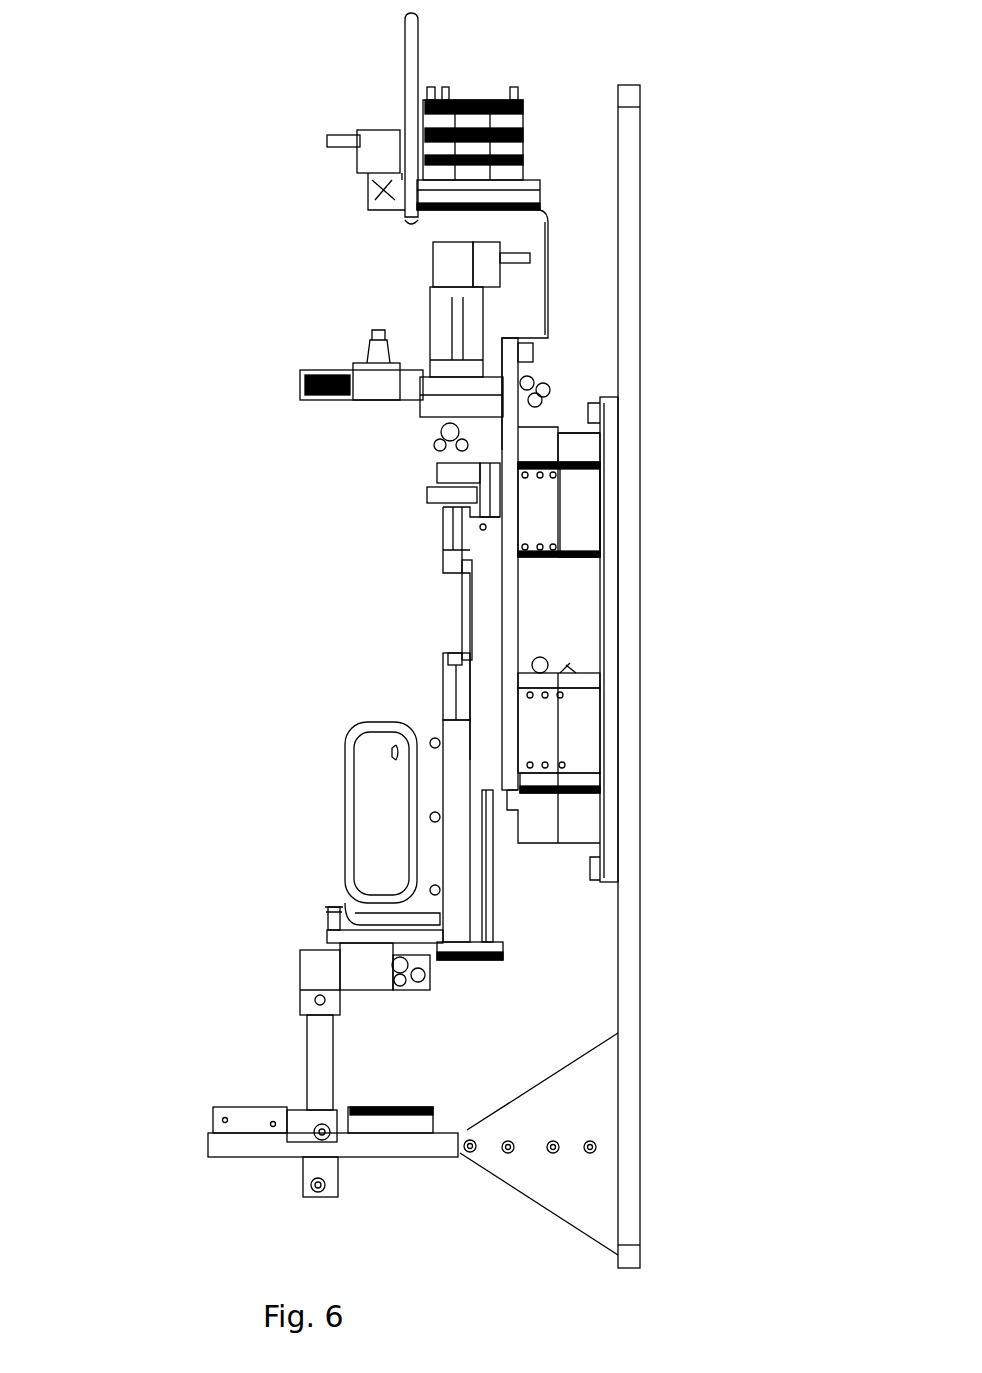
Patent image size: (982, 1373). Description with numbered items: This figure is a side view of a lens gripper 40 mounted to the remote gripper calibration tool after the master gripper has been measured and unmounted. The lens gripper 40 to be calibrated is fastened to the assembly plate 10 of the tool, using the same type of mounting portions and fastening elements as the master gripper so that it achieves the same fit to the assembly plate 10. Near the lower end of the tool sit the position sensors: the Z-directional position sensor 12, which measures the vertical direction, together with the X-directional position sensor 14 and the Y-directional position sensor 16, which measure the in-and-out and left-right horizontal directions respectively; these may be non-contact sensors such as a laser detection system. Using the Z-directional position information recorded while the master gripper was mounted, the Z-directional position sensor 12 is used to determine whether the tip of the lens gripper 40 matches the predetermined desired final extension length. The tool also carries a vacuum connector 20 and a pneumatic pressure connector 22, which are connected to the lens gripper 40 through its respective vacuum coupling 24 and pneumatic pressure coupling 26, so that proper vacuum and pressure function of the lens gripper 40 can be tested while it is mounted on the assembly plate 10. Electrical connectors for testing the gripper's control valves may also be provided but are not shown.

The assembly plate 10 is at (613, 633).
The Z-directional position sensor 12 is at (300, 1173).
The X-directional position sensor 14 is at (307, 1107).
The Y-directional position sensor 16 is at (253, 1107).
The vacuum connector 20 is at (585, 540).
The pneumatic pressure connector 22 is at (590, 760).
The vacuum coupling 24 is at (545, 490).
The pneumatic pressure coupling 26 is at (545, 703).
The lens gripper 40 is at (455, 687).